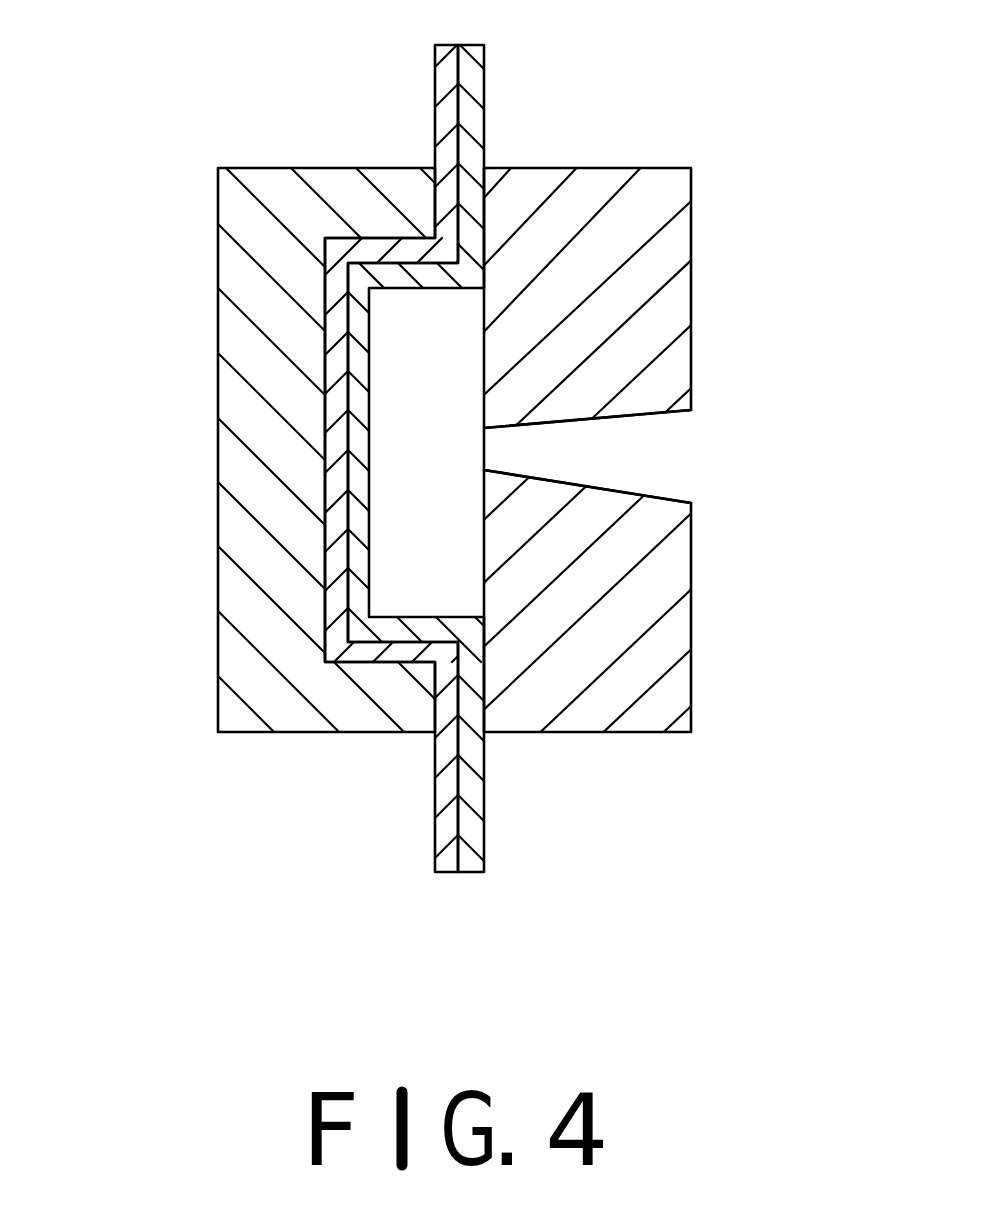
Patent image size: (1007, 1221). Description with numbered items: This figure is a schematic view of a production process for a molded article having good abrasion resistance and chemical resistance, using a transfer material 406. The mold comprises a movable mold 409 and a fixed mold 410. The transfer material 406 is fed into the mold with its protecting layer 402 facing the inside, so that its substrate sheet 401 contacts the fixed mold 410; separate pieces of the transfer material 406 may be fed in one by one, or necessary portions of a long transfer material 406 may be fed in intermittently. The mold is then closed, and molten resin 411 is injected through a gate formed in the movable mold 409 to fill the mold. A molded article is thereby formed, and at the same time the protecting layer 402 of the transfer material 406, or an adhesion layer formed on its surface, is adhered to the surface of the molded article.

The substrate sheet 401 is at (435, 105).
The protecting layer 402 is at (485, 100).
The transfer material 406 is at (458, 503).
The movable mold 409 is at (660, 685).
The fixed mold 410 is at (258, 468).
The molten resin 411 is at (645, 455).